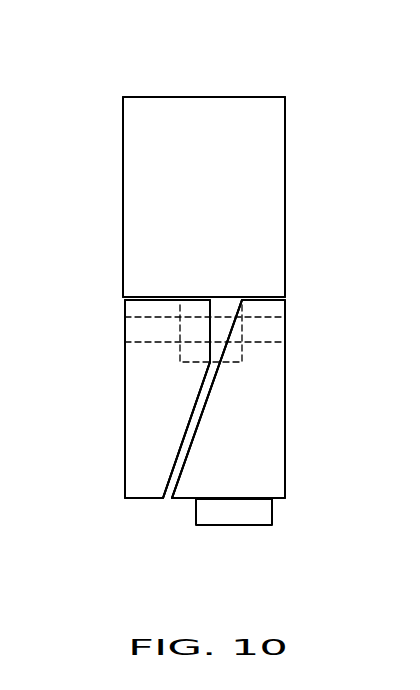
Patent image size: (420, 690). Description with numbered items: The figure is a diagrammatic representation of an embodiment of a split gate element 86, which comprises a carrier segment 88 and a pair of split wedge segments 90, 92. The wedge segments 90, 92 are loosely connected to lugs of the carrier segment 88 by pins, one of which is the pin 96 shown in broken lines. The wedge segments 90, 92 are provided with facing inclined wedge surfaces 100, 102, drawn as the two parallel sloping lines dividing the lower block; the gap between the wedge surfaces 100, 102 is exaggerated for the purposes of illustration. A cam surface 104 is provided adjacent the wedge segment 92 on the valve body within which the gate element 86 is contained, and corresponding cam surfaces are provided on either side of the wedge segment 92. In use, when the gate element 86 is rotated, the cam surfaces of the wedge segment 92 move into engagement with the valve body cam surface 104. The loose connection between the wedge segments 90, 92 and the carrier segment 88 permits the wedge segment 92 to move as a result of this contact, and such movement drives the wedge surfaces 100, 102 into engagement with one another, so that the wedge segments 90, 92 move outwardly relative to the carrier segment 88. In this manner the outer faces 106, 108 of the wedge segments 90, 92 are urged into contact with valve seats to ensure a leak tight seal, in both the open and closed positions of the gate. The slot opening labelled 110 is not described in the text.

The split gate element 86 is at (258, 80).
The carrier segment 88 is at (218, 205).
The wedge segment 90 is at (163, 394).
The wedge segment 92 is at (258, 459).
The pin 96 is at (287, 321).
The inclined wedge surface 100 is at (183, 440).
The inclined wedge surface 102 is at (186, 467).
The cam surface 104 is at (257, 496).
The outer face 106 is at (126, 354).
The outer face 108 is at (285, 398).
The slot opening 110 is at (223, 323).